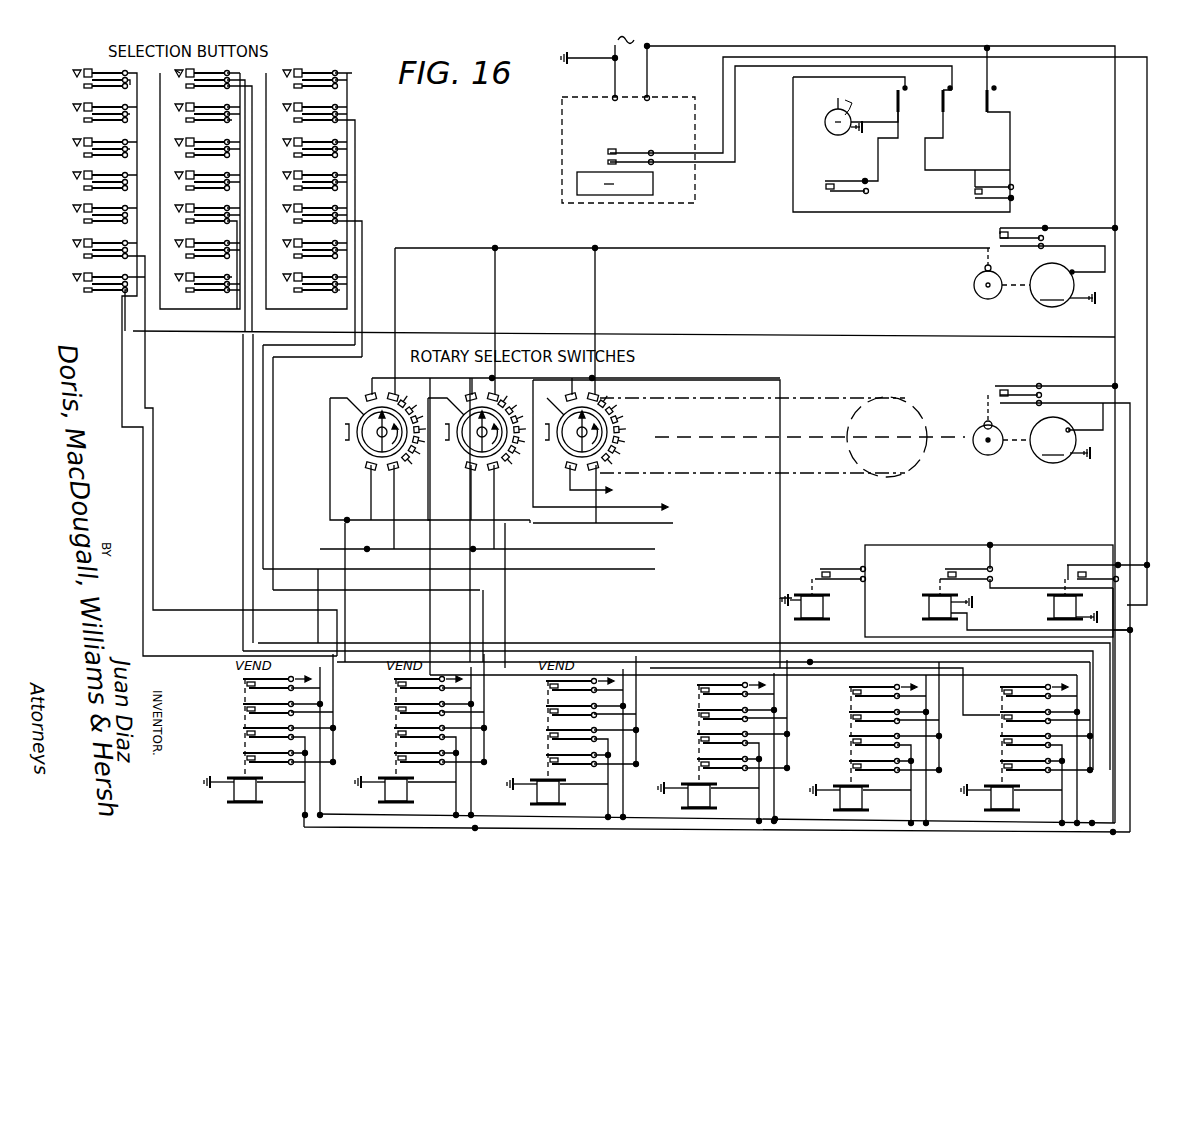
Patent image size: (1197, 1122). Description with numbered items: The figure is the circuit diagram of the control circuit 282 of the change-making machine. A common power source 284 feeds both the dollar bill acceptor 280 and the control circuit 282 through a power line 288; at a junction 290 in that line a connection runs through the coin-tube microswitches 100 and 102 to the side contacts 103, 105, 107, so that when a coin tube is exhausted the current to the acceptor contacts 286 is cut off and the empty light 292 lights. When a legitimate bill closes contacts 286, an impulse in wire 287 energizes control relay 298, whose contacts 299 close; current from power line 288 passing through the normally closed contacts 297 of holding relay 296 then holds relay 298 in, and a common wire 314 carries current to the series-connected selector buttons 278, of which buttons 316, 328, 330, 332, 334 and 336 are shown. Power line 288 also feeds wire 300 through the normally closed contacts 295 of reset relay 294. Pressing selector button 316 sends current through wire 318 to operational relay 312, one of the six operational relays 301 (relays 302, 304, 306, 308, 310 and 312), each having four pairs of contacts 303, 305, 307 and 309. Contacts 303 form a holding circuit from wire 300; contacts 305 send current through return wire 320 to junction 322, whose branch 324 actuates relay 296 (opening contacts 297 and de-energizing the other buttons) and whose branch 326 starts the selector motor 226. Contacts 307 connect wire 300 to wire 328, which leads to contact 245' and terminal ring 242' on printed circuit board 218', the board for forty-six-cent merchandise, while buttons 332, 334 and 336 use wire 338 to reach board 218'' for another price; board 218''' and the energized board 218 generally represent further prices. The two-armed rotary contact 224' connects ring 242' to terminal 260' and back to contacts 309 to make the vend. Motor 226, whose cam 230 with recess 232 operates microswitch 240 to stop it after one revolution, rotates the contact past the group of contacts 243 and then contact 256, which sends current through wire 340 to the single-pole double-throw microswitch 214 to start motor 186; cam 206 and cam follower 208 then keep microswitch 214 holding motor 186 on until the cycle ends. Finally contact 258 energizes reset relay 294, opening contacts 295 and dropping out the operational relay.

The microswitch 100 is at (965, 192).
The microswitch 102 is at (822, 178).
The side contact 103 is at (985, 106).
The side contact 105 is at (940, 103).
The side contact 107 is at (895, 103).
The motor 186 is at (1072, 286).
The cam 206 is at (974, 285).
The cam follower wheel 208 is at (983, 268).
The single-pole, double-throw microswitch 214 is at (1022, 222).
The printed circuit board 218 is at (782, 451).
The printed circuit board 218' is at (380, 475).
The printed circuit board 218'' is at (479, 472).
The rotary selector switch 218''' is at (662, 489).
The two-armed rotary contact 224' is at (331, 453).
The electric motor 226 is at (1035, 445).
The cam 230 is at (973, 432).
The recess 232 is at (983, 422).
The single-pole, double-throw microswitch 240 is at (988, 383).
The terminal ring 242' is at (323, 444).
The group of contacts 243 is at (640, 425).
The contact 245' is at (357, 431).
The contact 256 is at (393, 400).
The contact 258 is at (362, 395).
The terminal 260' is at (393, 486).
The selector buttons 278 is at (384, 165).
The dollar bill acceptor 280 is at (558, 142).
The control circuit 282 is at (1160, 228).
The power source 284 is at (605, 69).
The pair of contacts 286 is at (606, 155).
The wire 287 is at (1148, 300).
The power line 288 is at (1113, 365).
The junction 290 is at (988, 48).
The empty light 292 is at (838, 133).
The reset relay 294 is at (828, 607).
The normally closed contacts 295 is at (820, 567).
The holding relay 296 is at (928, 612).
The normally closed contacts 297 is at (942, 570).
The control relay 298 is at (1055, 614).
The contacts 299 is at (1062, 570).
The wire 300 is at (328, 826).
The operational relays 301 is at (658, 762).
The operational relay 302 is at (990, 802).
The contacts 303 is at (243, 756).
The operational relay 304 is at (840, 802).
The contacts 305 is at (243, 730).
The operational relay 306 is at (688, 800).
The contacts 307 is at (243, 705).
The operational relay 308 is at (535, 800).
The contacts 309 is at (243, 679).
The operational relay 310 is at (405, 792).
The operational relay 312 is at (230, 795).
The common wire 314 is at (748, 336).
The selector button 316 is at (75, 280).
The wire 318 is at (125, 480).
The return wire 320 is at (708, 830).
The junction 322 is at (1132, 632).
The branch 324 is at (975, 632).
The branch 326 is at (1122, 508).
The wire 328 is at (168, 218).
The selector button 330 is at (285, 112).
The selector button 332 is at (80, 230).
The selector button 334 is at (172, 80).
The selector button 336 is at (285, 220).
The wire 338 is at (430, 615).
The wire 340 is at (698, 258).